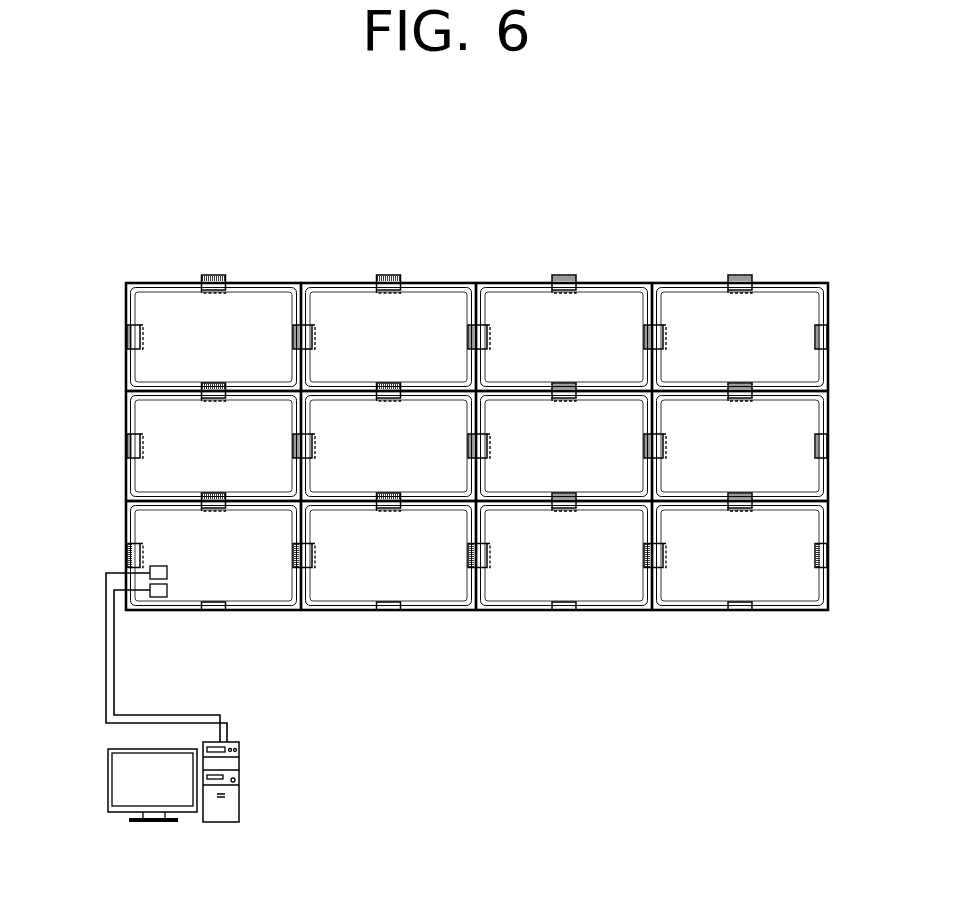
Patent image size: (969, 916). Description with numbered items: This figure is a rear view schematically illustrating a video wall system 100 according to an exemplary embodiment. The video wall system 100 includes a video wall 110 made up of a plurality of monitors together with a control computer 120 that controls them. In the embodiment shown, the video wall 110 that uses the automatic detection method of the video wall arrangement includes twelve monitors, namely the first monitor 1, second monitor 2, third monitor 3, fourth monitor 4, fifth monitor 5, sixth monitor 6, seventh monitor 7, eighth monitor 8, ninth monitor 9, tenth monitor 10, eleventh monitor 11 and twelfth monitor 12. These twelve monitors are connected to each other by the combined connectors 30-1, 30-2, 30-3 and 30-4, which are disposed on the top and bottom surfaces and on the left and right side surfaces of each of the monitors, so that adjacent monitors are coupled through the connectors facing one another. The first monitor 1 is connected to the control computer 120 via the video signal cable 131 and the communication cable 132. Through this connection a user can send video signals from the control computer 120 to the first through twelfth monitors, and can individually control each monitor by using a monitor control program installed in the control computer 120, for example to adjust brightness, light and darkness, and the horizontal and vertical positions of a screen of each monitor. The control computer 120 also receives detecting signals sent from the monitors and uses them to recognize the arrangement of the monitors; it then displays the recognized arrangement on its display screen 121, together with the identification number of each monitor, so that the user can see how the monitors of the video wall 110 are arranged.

The video wall system 100 is at (497, 170).
The video wall 110 is at (668, 276).
The first monitor 1 is at (267, 590).
The second monitor 2 is at (240, 480).
The third monitor 3 is at (177, 300).
The fourth monitor 4 is at (364, 300).
The fifth monitor 5 is at (353, 475).
The sixth monitor 6 is at (428, 590).
The seventh monitor 7 is at (619, 590).
The eighth monitor 8 is at (534, 475).
The ninth monitor 9 is at (599, 300).
The tenth monitor 10 is at (789, 300).
The eleventh monitor 11 is at (695, 480).
The twelfth monitor 12 is at (771, 590).
The combined connector 30-1 is at (207, 402).
The combined connector 30-2 is at (207, 386).
The combined connector 30-3 is at (293, 335).
The combined connector 30-4 is at (312, 335).
The control computer 120 is at (256, 734).
The display screen 121 is at (120, 800).
The video signal cable 131 is at (106, 642).
The communication cable 132 is at (115, 672).